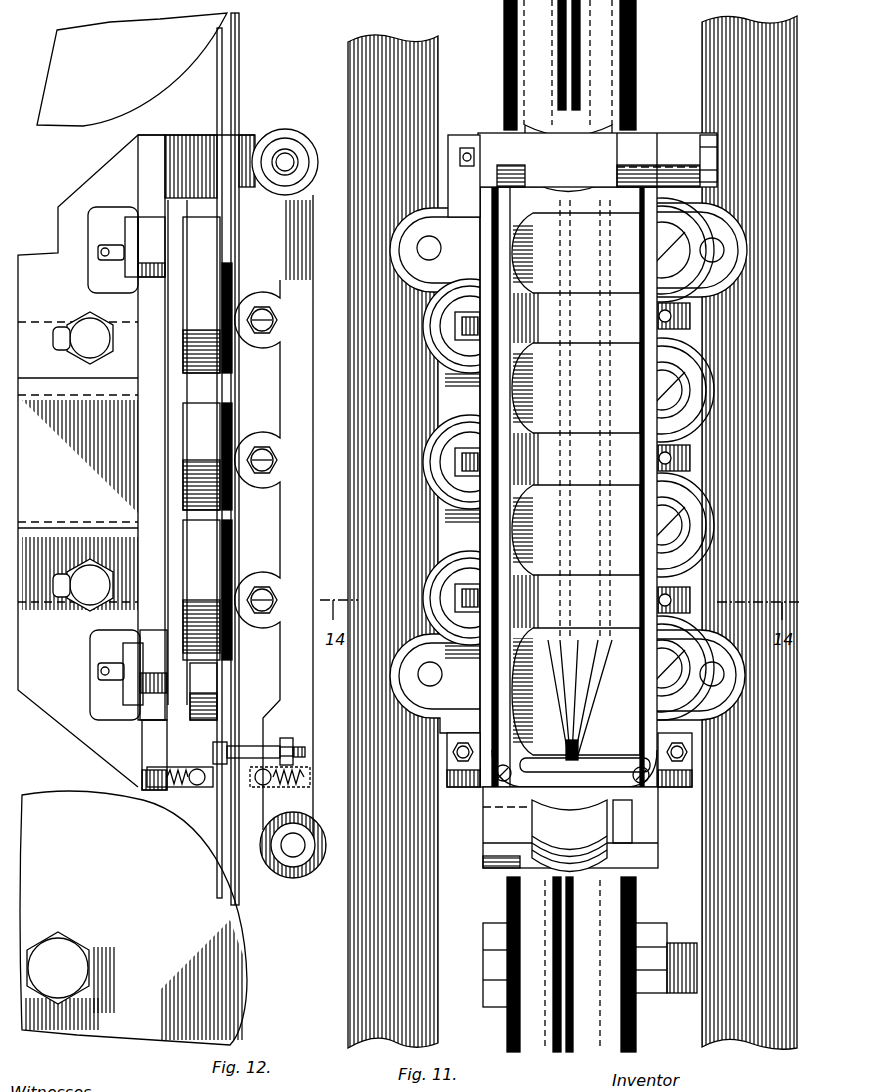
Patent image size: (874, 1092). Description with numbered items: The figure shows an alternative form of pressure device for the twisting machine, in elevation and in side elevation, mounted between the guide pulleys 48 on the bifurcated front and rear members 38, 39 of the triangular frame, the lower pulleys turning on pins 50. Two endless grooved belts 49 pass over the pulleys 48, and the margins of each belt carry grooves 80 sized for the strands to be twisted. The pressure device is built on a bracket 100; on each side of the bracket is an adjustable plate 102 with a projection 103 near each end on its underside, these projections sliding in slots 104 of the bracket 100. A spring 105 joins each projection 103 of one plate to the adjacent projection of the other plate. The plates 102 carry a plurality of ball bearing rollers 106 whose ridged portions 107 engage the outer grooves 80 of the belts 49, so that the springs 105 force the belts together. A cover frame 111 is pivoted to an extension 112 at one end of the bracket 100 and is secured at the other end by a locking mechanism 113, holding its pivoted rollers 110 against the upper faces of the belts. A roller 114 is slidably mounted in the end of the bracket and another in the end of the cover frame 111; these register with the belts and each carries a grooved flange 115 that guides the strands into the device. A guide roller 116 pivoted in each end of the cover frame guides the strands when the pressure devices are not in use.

In FIG. 11, the front member 38 is at (436, 884).
In FIG. 11, the rear member 39 is at (703, 876).
In FIG. 12, the guide pulley 48 is at (93, 113).
In FIG. 11, the guide pulley 48 is at (510, 965).
In FIG. 11, the endless grooved belt 49 is at (513, 107).
In FIG. 11, the pin 50 is at (688, 953).
In FIG. 12, the groove 80 is at (234, 220).
In FIG. 11, the groove 80 is at (558, 48).
In FIG. 12, the bracket 100 is at (73, 725).
In FIG. 11, the bracket 100 is at (454, 135).
In FIG. 12, the adjustable plate 102 is at (143, 728).
In FIG. 11, the adjustable plate 102 is at (455, 228).
In FIG. 12, the projection 103 is at (131, 228).
In FIG. 11, the slot 104 is at (420, 256).
In FIG. 12, the spring 105 is at (108, 245).
In FIG. 12, the ball bearing roller 106 is at (228, 268).
In FIG. 11, the ball bearing roller 106 is at (430, 312).
In FIG. 12, the ridged portion 107 is at (210, 285).
In FIG. 11, the ridged portion 107 is at (428, 332).
In FIG. 12, the roller 110 is at (263, 342).
In FIG. 12, the cover frame 111 is at (297, 469).
In FIG. 11, the cover frame 111 is at (487, 385).
In FIG. 12, the extension 112 is at (249, 137).
In FIG. 11, the extension 112 is at (675, 145).
In FIG. 12, the locking mechanism 113 is at (287, 740).
In FIG. 11, the locking mechanism 113 is at (465, 765).
In FIG. 12, the roller 114 is at (247, 793).
In FIG. 11, the grooved flange 115 is at (573, 752).
In FIG. 12, the guide roller 116 is at (293, 132).
In FIG. 11, the guide roller 116 is at (542, 152).